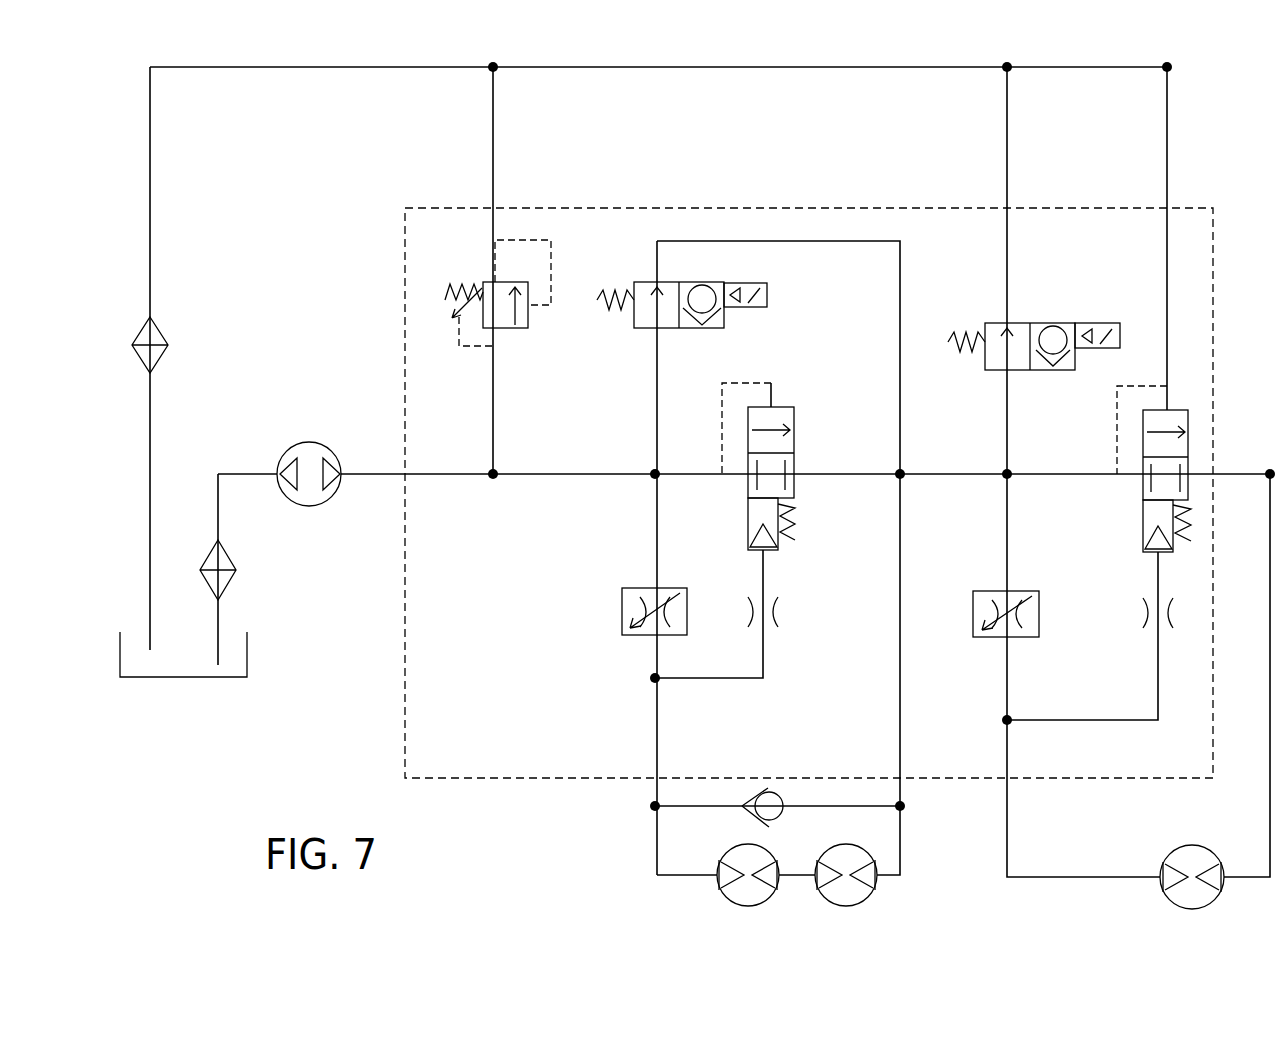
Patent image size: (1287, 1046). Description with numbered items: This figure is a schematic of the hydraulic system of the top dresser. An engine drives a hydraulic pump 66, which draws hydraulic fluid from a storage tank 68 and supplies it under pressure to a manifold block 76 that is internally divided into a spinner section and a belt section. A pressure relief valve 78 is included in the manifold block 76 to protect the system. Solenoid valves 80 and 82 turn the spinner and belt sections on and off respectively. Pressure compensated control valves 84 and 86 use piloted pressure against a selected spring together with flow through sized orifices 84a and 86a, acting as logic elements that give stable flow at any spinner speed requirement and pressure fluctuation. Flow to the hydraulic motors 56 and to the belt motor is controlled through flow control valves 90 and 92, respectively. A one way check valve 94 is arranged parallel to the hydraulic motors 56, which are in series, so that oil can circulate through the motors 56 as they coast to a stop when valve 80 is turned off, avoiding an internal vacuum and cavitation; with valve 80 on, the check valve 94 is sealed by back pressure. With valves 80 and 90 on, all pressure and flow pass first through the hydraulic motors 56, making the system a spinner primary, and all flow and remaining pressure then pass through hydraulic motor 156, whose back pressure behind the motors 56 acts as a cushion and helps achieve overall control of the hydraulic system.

The hydraulic motors 56 is at (846, 923).
The hydraulic pump 66 is at (309, 441).
The storage tank 68 is at (247, 652).
The manifold block 76 is at (432, 207).
The pressure relief valve 78 is at (508, 330).
The solenoid valve 80 is at (703, 285).
The solenoid valve 82 is at (1047, 322).
The pressure compensated control valve 84 is at (783, 405).
The sized orifice 84a is at (776, 608).
The pressure compensated control valve 86 is at (1178, 408).
The sized orifice 86a is at (1172, 616).
The flow control valve 90 is at (640, 587).
The flow control valve 92 is at (1025, 590).
The one way check valve 94 is at (770, 800).
The hydraulic motor 156 is at (1170, 906).